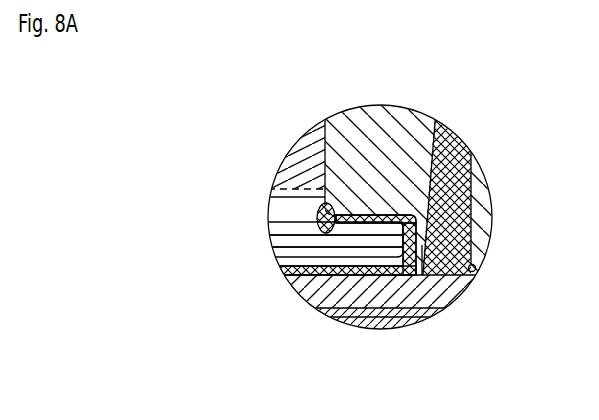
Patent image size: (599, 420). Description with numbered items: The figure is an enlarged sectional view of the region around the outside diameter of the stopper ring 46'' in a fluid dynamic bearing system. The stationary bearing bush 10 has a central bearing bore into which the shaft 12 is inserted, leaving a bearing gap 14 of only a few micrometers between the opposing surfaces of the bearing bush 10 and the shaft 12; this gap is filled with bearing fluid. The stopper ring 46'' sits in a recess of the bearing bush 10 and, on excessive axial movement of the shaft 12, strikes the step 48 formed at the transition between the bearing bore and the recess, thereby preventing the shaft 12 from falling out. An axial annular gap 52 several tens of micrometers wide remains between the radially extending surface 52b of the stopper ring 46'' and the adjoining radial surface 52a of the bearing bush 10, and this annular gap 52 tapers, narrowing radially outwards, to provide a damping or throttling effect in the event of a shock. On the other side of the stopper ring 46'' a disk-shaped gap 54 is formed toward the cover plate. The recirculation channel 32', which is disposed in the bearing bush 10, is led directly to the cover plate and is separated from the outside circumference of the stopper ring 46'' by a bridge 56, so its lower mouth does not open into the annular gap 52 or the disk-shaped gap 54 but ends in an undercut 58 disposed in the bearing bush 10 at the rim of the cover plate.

The bearing bush 10 is at (365, 155).
The shaft 12 is at (312, 153).
The bearing gap 14 is at (325, 150).
The recirculation channel 32' is at (493, 187).
The stopper ring 46'' is at (332, 318).
The step 48 is at (318, 227).
The annular gap 52 is at (347, 222).
The radial surface of the bearing bush 52a is at (382, 217).
The radial surface of the stopper ring 52b is at (381, 228).
The disk-shaped gap 54 is at (287, 270).
The bridge 56 is at (424, 276).
The undercut 58 is at (476, 266).